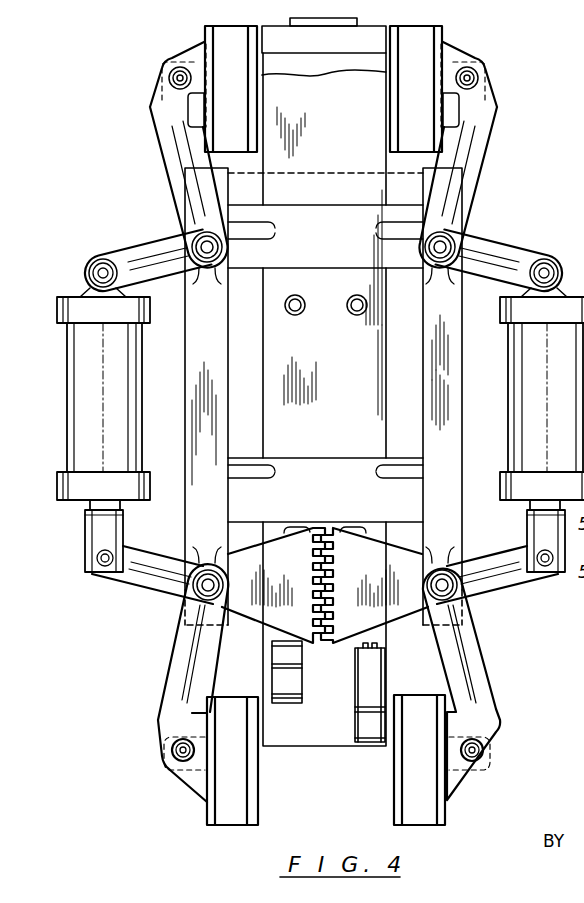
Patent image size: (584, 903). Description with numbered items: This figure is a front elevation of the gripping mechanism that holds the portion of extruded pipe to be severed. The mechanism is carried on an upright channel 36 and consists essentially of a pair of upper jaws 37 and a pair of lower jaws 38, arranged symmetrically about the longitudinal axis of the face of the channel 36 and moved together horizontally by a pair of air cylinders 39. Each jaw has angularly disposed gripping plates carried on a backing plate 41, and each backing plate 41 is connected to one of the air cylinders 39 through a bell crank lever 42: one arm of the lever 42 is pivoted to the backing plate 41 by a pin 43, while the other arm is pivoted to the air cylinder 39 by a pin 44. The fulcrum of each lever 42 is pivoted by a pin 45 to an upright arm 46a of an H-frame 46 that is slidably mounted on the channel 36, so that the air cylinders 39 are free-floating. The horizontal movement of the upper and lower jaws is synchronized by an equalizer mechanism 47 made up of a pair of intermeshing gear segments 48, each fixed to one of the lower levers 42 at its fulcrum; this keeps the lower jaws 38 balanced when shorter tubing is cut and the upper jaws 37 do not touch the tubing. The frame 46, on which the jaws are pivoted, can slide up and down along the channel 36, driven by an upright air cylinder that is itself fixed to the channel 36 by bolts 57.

The upright channel 36 is at (360, 392).
The upper jaws 37 is at (203, 42).
The lower jaws 38 is at (393, 773).
The air cylinders 39 is at (142, 409).
The backing plate 41 is at (583, 745).
The bell crank lever 42 is at (162, 152).
The pin 43 is at (478, 80).
The pin 44 is at (550, 262).
The pin 45 is at (459, 244).
The H-frame 46 is at (233, 373).
The upright arm 46a is at (423, 425).
The equalizer mechanism 47 is at (327, 642).
The gear segments 48 is at (302, 543).
The bolts 57 is at (352, 296).